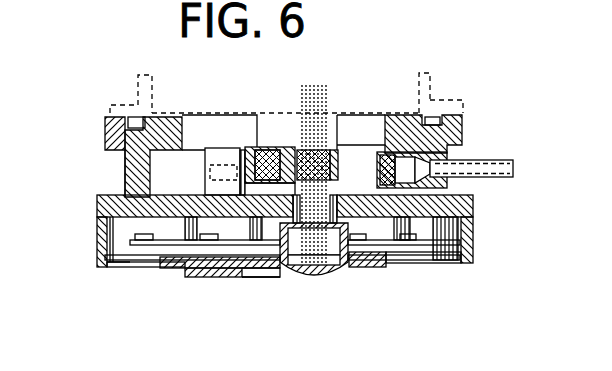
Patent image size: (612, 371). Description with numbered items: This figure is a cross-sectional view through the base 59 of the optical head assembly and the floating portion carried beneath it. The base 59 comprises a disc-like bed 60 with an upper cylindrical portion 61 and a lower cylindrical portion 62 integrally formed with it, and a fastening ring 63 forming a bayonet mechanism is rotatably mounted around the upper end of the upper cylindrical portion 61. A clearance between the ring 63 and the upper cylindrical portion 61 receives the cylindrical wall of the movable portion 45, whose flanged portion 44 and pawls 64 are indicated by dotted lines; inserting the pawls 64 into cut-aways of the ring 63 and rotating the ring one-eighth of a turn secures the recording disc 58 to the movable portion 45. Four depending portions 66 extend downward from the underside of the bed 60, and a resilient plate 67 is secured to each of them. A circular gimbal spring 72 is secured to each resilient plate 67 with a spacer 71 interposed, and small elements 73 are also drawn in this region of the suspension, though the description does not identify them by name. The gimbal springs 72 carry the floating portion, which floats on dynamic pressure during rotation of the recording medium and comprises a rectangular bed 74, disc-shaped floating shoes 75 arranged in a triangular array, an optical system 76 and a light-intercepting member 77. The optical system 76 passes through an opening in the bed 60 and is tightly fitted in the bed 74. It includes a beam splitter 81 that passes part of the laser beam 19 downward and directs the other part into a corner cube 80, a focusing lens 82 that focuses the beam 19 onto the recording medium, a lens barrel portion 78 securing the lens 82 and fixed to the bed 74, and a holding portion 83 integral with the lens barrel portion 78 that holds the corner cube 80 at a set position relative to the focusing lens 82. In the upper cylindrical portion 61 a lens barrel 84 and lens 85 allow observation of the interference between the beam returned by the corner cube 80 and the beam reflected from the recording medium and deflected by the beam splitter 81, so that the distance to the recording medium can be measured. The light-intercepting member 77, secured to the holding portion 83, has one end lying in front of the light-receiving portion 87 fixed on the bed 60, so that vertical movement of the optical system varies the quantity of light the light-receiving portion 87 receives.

The laser beam 19 is at (308, 156).
The flanged portion 44 is at (105, 110).
The movable portion 45 is at (410, 89).
The recording disc 58 is at (194, 333).
The base 59 is at (118, 179).
The disc-like bed 60 is at (219, 132).
The upper cylindrical portion 61 is at (122, 151).
The lower cylindrical portion 62 is at (97, 226).
The fastening ring 63 is at (105, 122).
The pawls 64 is at (138, 108).
The depending portions 66 is at (190, 215).
The resilient plate 67 is at (194, 277).
The spacer 71 is at (130, 258).
The gimbal spring 72 is at (165, 268).
The component 73 is at (148, 260).
The bed 74 is at (252, 280).
The floating shoes 75 is at (224, 278).
The optical system 76 is at (371, 139).
The light-intercepting member 77 is at (258, 150).
The lens barrel portion 78 is at (278, 268).
The corner cube 80 is at (285, 160).
The beam splitter 81 is at (330, 165).
The focusing lens 82 is at (312, 280).
The holding portion 83 is at (262, 147).
The lens barrel 84 is at (490, 178).
The lens 85 is at (392, 158).
The light-receiving portion 87 is at (228, 150).